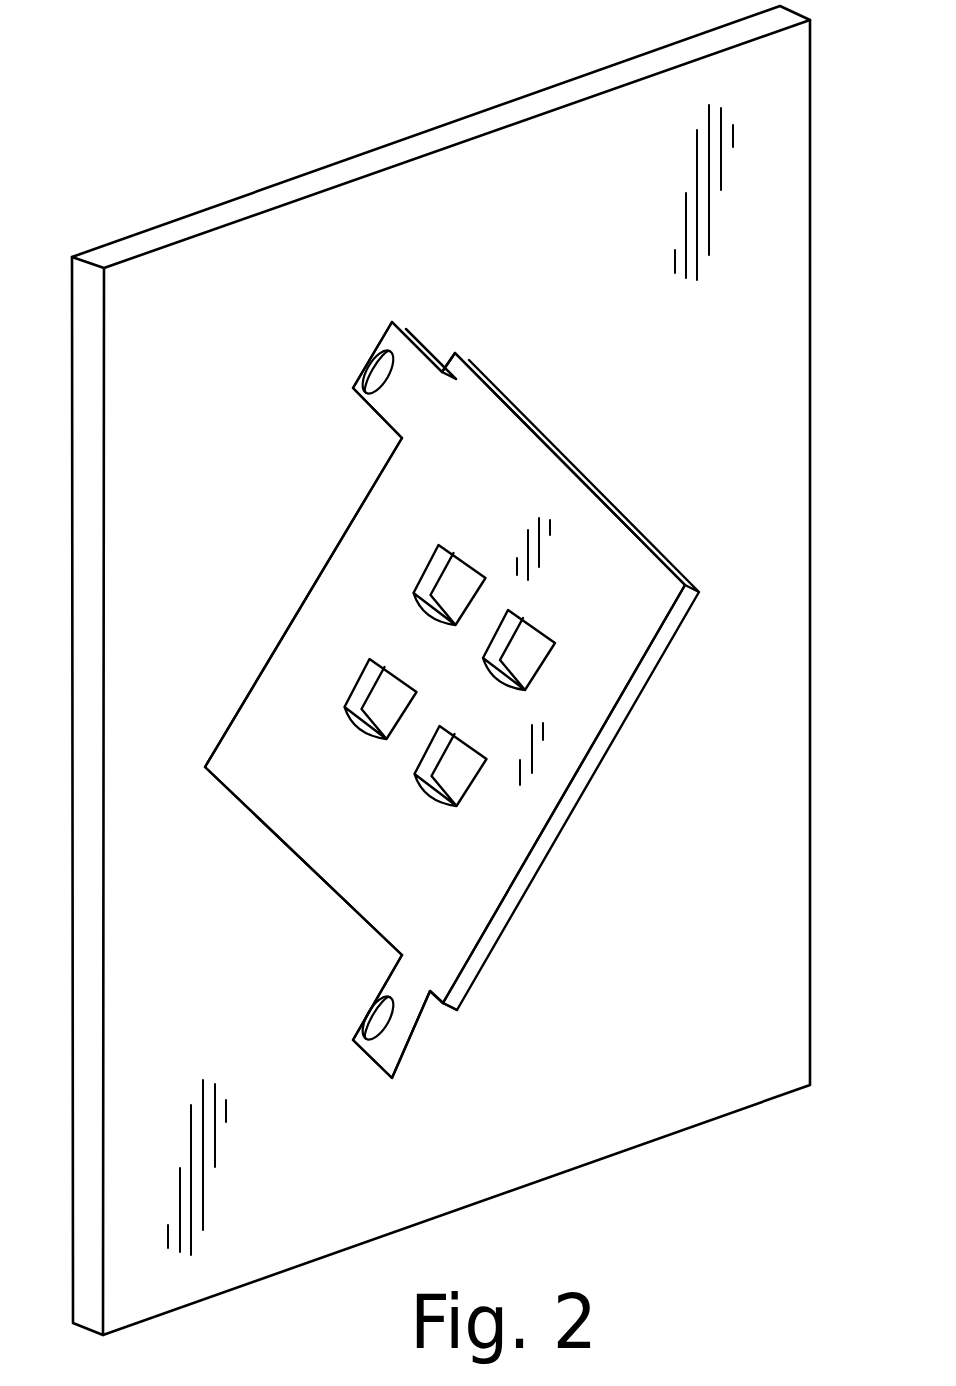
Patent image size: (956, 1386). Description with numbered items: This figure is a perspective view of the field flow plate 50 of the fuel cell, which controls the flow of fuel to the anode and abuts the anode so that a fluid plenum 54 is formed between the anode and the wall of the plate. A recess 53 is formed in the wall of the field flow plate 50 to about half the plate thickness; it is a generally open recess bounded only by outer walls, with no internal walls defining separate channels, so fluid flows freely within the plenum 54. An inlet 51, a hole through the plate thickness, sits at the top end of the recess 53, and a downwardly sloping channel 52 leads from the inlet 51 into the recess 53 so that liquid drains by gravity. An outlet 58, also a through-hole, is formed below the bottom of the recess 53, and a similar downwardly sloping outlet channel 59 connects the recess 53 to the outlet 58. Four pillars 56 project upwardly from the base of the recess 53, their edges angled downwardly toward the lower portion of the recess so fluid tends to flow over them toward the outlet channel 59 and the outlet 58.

The field flow plate 50 is at (396, 135).
The inlet 51 is at (368, 365).
The channel 52 is at (410, 362).
The recess 53 is at (538, 473).
The plenum 54 is at (632, 527).
The pillars 56 is at (467, 567).
The outlet 58 is at (368, 1012).
The outlet channel 59 is at (410, 998).